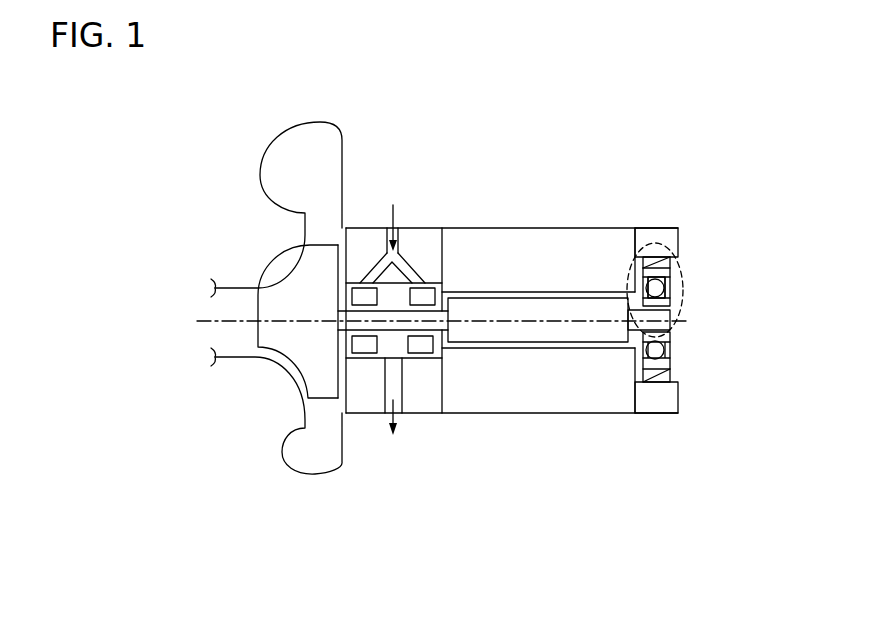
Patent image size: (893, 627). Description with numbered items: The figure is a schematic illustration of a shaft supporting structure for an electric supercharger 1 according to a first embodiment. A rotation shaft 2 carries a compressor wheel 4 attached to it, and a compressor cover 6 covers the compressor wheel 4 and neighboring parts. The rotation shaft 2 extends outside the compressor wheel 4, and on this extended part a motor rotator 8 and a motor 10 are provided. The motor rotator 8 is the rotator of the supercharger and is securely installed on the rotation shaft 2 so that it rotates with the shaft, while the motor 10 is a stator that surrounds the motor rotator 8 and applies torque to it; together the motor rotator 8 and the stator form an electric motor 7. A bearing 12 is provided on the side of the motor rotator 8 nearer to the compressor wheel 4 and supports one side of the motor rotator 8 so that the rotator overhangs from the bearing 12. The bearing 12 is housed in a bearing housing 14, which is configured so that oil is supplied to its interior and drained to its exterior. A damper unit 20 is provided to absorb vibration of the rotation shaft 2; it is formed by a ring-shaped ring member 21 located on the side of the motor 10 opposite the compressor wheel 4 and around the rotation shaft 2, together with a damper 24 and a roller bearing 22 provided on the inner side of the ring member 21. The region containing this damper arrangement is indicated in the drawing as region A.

The electric supercharger 1 is at (630, 100).
The rotation shaft 2 is at (665, 323).
The compressor wheel 4 is at (323, 378).
The compressor cover 6 is at (288, 368).
The electric motor 7 is at (477, 215).
The motor rotator 8 is at (562, 335).
The motor 10 is at (523, 245).
The bearing 12 is at (367, 297).
The bearing housing 14 is at (436, 400).
The damper unit 20 is at (684, 286).
The ring member 21 is at (660, 238).
The roller bearing 22 is at (667, 273).
The damper 24 is at (650, 263).
The detail region A is at (680, 277).